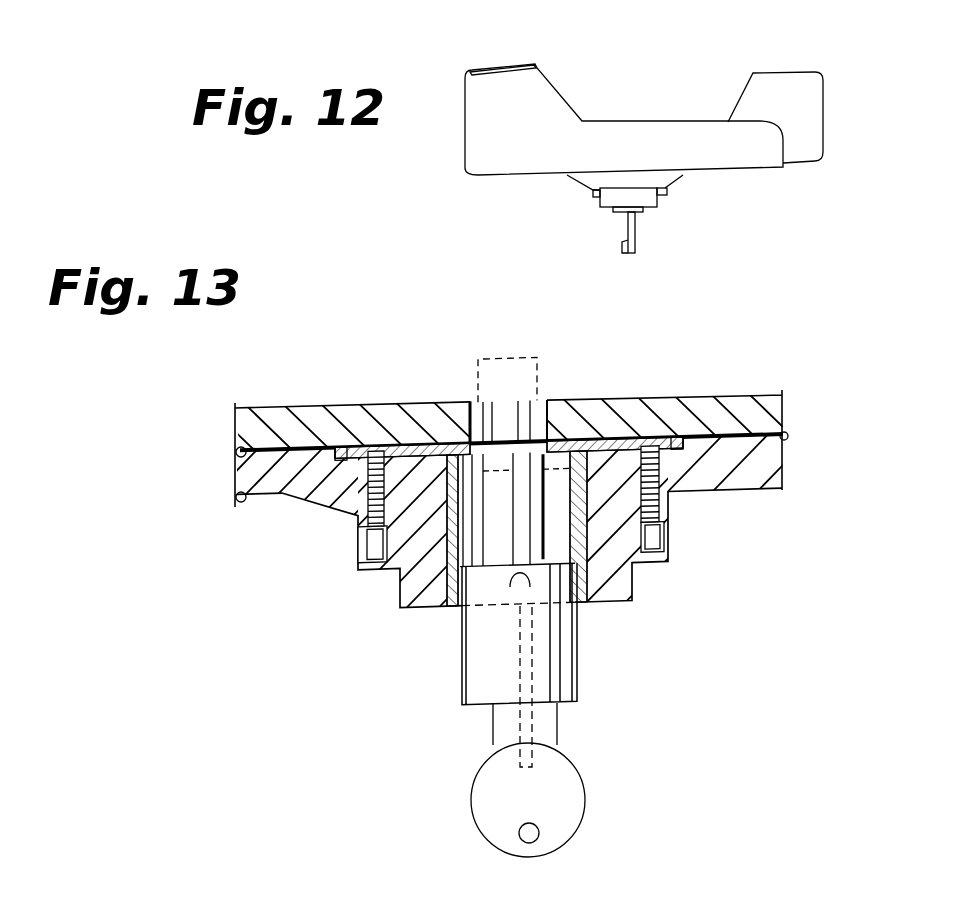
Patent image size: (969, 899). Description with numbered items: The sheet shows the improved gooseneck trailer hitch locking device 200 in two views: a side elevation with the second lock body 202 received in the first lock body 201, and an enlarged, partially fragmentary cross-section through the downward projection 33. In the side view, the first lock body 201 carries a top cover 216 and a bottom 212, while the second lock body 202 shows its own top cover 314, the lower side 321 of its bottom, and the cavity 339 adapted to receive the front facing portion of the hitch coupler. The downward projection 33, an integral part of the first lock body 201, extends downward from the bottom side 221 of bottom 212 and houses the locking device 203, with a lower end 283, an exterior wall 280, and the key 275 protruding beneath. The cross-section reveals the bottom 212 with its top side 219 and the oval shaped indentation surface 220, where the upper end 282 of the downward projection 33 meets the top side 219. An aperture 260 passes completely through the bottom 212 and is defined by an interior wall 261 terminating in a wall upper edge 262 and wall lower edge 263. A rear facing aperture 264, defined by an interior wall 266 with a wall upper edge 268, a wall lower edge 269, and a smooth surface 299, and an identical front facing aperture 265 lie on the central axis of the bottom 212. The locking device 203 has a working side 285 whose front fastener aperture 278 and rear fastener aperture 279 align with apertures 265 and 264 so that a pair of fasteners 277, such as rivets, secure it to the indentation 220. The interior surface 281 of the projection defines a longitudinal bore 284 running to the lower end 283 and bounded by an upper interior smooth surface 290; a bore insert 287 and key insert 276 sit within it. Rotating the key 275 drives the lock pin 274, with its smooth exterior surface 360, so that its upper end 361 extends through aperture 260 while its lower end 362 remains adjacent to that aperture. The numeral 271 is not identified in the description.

In FIG. 12, the improved gooseneck trailer hitch locking device 200 is at (770, 217).
In FIG. 12, the first lock body 201 is at (463, 90).
In FIG. 12, the second lock body 202 is at (825, 118).
In FIG. 12, the locking device 203 is at (637, 217).
In FIG. 13, the locking device 203 is at (577, 705).
In FIG. 12, the bottom 212 is at (480, 175).
In FIG. 13, the bottom 212 is at (784, 443).
In FIG. 12, the top cover 216 is at (500, 65).
In FIG. 13, the top side 219 is at (243, 450).
In FIG. 13, the oval shaped indentation surface 220 is at (783, 436).
In FIG. 12, the bottom side 221 is at (513, 175).
In FIG. 13, the bottom side 221 is at (243, 497).
In FIG. 13, the aperture 260 is at (523, 407).
In FIG. 13, the interior wall 261 is at (482, 407).
In FIG. 13, the wall upper edge 262 is at (542, 407).
In FIG. 13, the wall lower edge 263 is at (548, 407).
In FIG. 13, the rear facing aperture 264 is at (378, 447).
In FIG. 13, the front facing aperture 265 is at (663, 518).
In FIG. 13, the interior wall 266 is at (683, 458).
In FIG. 13, the wall upper edge 268 is at (398, 447).
In FIG. 13, the wall lower edge 269 is at (358, 565).
In FIG. 13, the body right shoulder 271 is at (613, 443).
In FIG. 13, the lock pin 274 is at (509, 407).
In FIG. 12, the key 275 is at (628, 250).
In FIG. 13, the key 275 is at (588, 797).
In FIG. 13, the key insert 276 is at (557, 707).
In FIG. 13, the fasteners 277 is at (366, 525).
In FIG. 13, the front fastener aperture 278 is at (717, 395).
In FIG. 13, the rear fastener aperture 279 is at (322, 408).
In FIG. 12, the exterior wall 280 is at (667, 193).
In FIG. 13, the exterior wall 280 is at (398, 598).
In FIG. 13, the interior surface 281 is at (473, 407).
In FIG. 13, the upper end 282 is at (445, 407).
In FIG. 12, the lower end 283 is at (607, 213).
In FIG. 13, the lower end 283 is at (440, 608).
In FIG. 13, the longitudinal bore 284 is at (577, 625).
In FIG. 13, the working side 285 is at (633, 443).
In FIG. 13, the bore insert 287 is at (462, 683).
In FIG. 13, the upper interior smooth surface 290 is at (462, 617).
In FIG. 13, the smooth surface 299 is at (358, 527).
In FIG. 12, the top cover 314 is at (783, 72).
In FIG. 12, the lower side 321 is at (803, 163).
In FIG. 12, the cavity 339 is at (730, 118).
In FIG. 12, the downward projection 33 is at (597, 200).
In FIG. 13, the downward projection 33 is at (628, 586).
In FIG. 13, the smooth exterior surface 360 is at (452, 407).
In FIG. 13, the upper end 361 is at (507, 407).
In FIG. 13, the lower end 362 is at (527, 573).